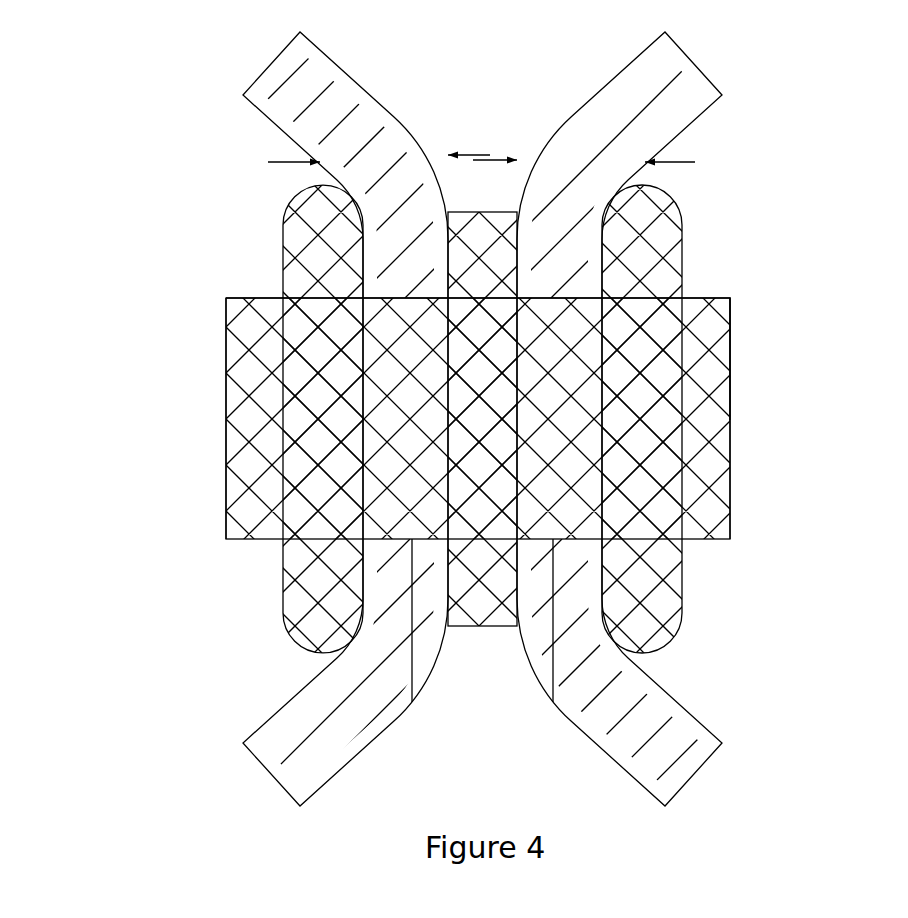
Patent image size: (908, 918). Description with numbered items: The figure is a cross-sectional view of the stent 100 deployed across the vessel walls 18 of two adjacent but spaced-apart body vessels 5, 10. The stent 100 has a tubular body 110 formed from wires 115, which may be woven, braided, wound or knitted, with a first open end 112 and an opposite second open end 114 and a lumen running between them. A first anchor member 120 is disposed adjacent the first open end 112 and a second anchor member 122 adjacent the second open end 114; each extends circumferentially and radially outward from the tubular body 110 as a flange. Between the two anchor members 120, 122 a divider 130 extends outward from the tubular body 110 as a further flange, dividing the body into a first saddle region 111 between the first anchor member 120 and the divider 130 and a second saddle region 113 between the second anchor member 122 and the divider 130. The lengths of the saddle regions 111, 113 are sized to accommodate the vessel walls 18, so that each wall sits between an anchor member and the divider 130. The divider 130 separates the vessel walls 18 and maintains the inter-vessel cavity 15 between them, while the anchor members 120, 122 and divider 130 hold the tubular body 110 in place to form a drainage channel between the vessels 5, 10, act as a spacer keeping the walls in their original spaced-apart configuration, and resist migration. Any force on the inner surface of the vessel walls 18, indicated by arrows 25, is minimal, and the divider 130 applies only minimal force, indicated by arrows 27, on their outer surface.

The stent 100 is at (800, 158).
The tubular body 110 is at (226, 354).
The first open end 112 is at (226, 488).
The second open end 114 is at (730, 493).
The wires 115 is at (722, 351).
The first anchor member 120 is at (302, 643).
The second anchor member 122 is at (660, 643).
The divider 130 is at (495, 628).
The vessel walls 18 is at (282, 727).
The first saddle region 111 is at (412, 697).
The second saddle region 113 is at (550, 718).
The arrows indicating force on inner surface of vessel walls 25 is at (283, 163).
The arrows indicating force applied by divider 27 is at (482, 155).
The inter-vessel cavity 15 is at (500, 58).
The first vessel 5 is at (106, 424).
The second vessel 10 is at (825, 424).